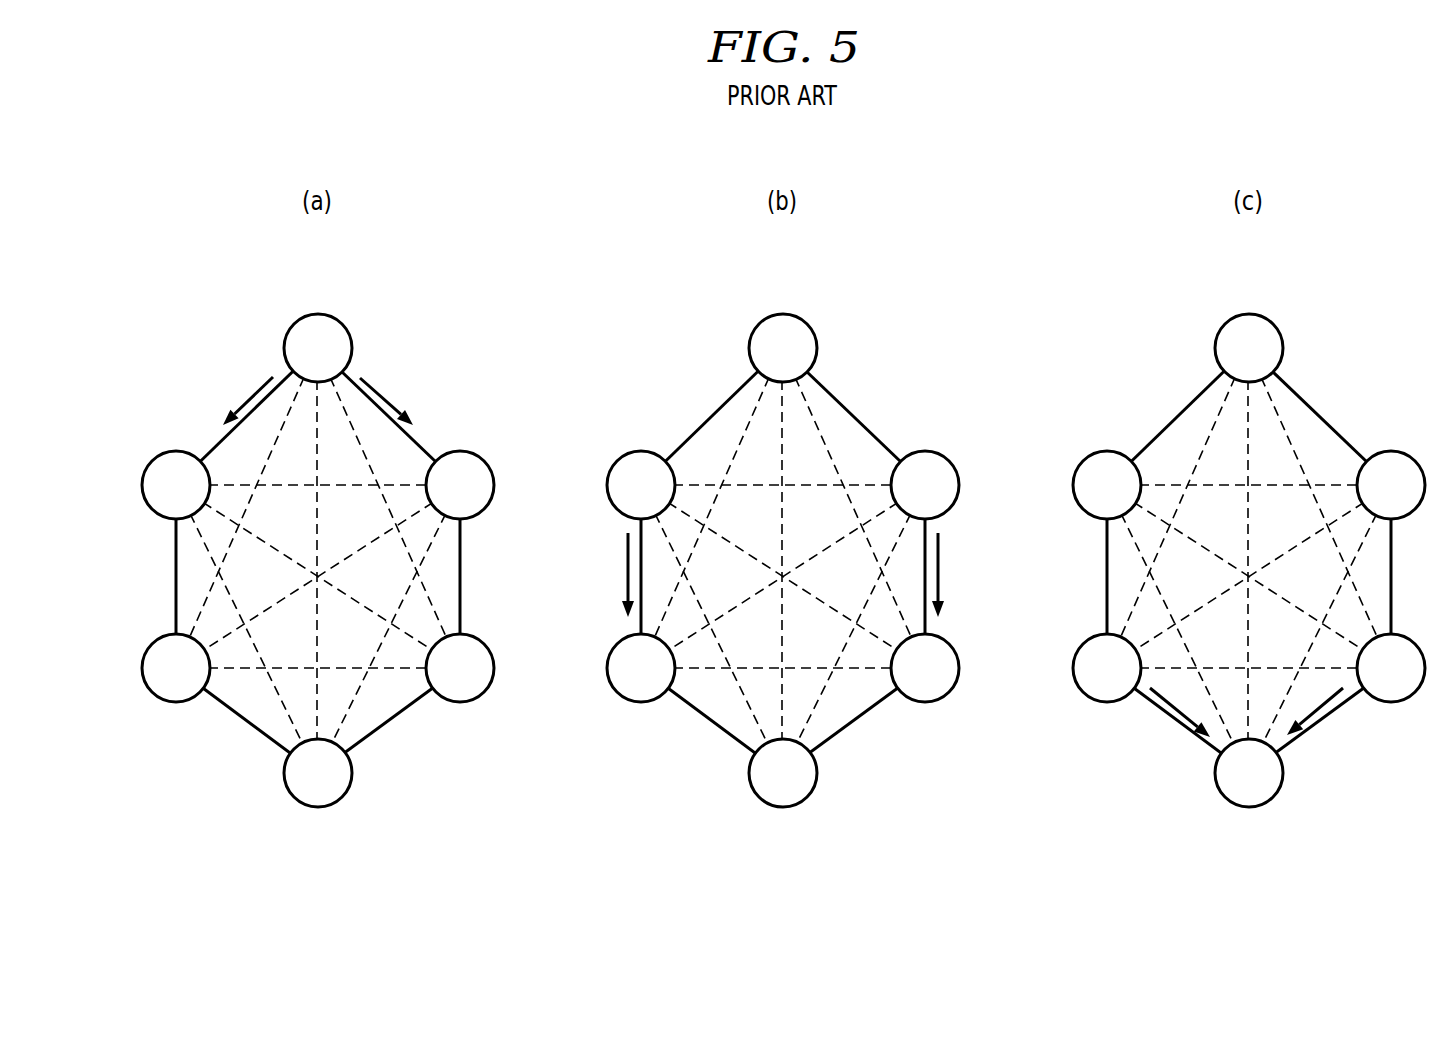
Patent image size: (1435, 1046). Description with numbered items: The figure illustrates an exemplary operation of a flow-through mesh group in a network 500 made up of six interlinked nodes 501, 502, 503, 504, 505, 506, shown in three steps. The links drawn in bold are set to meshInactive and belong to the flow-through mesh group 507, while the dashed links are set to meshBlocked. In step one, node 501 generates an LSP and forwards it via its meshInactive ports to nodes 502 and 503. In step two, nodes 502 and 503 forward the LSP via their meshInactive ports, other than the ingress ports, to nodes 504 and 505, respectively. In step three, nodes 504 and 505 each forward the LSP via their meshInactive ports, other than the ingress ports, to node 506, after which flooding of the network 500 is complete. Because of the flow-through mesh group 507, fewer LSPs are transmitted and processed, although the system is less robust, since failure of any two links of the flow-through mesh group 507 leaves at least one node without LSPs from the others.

The network 500 is at (299, 276).
The node 501 is at (342, 326).
The node 502 is at (176, 452).
The node 503 is at (460, 452).
The node 504 is at (176, 701).
The node 505 is at (460, 701).
The node 506 is at (317, 806).
The flow-through mesh group 507 is at (176, 573).